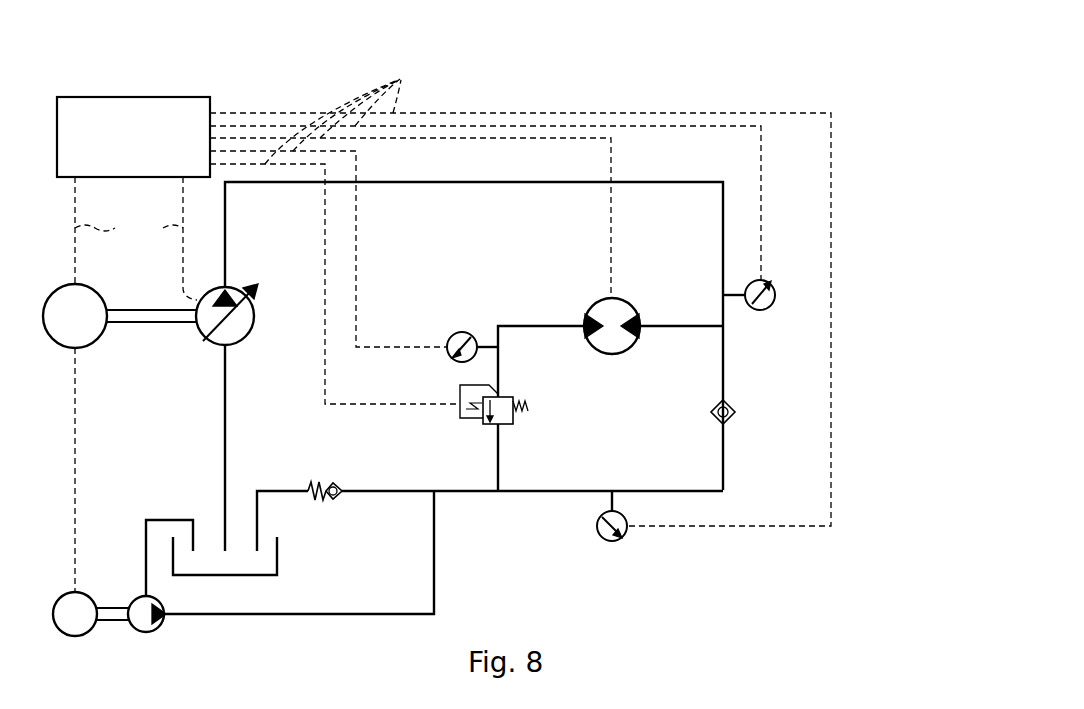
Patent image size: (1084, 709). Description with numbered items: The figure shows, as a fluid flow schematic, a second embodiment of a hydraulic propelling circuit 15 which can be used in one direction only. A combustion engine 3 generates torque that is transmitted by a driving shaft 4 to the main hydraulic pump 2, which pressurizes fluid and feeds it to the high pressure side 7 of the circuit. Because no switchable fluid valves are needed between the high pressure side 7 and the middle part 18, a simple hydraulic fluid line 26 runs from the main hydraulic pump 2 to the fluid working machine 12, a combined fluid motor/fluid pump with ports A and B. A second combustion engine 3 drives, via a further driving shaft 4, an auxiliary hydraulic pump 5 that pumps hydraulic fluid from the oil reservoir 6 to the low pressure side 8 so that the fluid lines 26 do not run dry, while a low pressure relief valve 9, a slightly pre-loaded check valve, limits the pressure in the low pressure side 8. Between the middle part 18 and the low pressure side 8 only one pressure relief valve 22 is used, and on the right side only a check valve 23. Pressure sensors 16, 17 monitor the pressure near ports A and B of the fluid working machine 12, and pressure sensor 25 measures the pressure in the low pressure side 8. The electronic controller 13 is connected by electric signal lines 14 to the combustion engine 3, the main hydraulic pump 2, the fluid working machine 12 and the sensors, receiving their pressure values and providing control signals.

The main hydraulic pump 2 is at (250, 336).
The combustion engine 3 is at (75, 460).
The driving shaft 4 is at (138, 310).
The auxiliary hydraulic pump 5 is at (158, 632).
The oil reservoir 6 is at (278, 553).
The high pressure side 7 is at (790, 218).
The low pressure side 8 is at (742, 550).
The low pressure relief valve 9 is at (315, 482).
The fluid working machine 12 is at (612, 355).
The electronic controller 13 is at (133, 137).
The electric signal lines 14 is at (404, 88).
The hydraulic propelling circuit 15 is at (893, 154).
The pressure sensor 16 is at (765, 311).
The pressure sensor 17 is at (462, 331).
The middle part 18 is at (791, 297).
The pressure relief valve 22 is at (514, 416).
The check valve 23 is at (735, 408).
The pressure sensor 25 is at (612, 541).
The fluid lines 26 is at (302, 183).